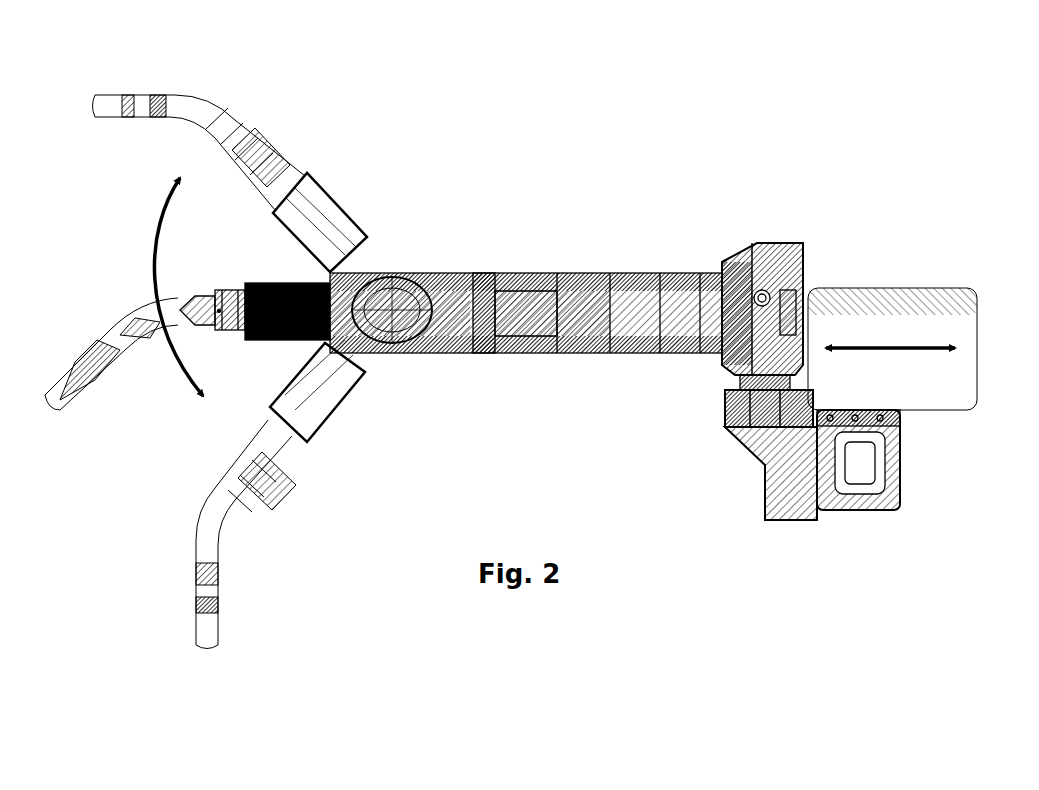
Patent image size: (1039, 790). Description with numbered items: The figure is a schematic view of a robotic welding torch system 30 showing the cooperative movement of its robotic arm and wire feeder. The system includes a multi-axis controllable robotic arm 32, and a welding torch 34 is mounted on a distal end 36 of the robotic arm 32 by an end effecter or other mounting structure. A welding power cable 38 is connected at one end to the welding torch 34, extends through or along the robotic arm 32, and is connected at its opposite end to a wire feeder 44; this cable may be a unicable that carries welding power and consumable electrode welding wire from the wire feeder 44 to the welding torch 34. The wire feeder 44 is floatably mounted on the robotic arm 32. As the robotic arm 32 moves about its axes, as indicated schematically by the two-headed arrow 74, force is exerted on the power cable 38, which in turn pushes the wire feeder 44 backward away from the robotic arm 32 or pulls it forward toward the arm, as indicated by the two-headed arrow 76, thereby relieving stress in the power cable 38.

The robotic welding torch system 30 is at (483, 160).
The robotic arm 32 is at (582, 277).
The welding torch 34 is at (190, 292).
The distal end 36 is at (300, 340).
The welding power cable 38 is at (525, 312).
The wire feeder 44 is at (852, 292).
The two-headed arrow 74 is at (152, 248).
The two-headed arrow 76 is at (925, 355).